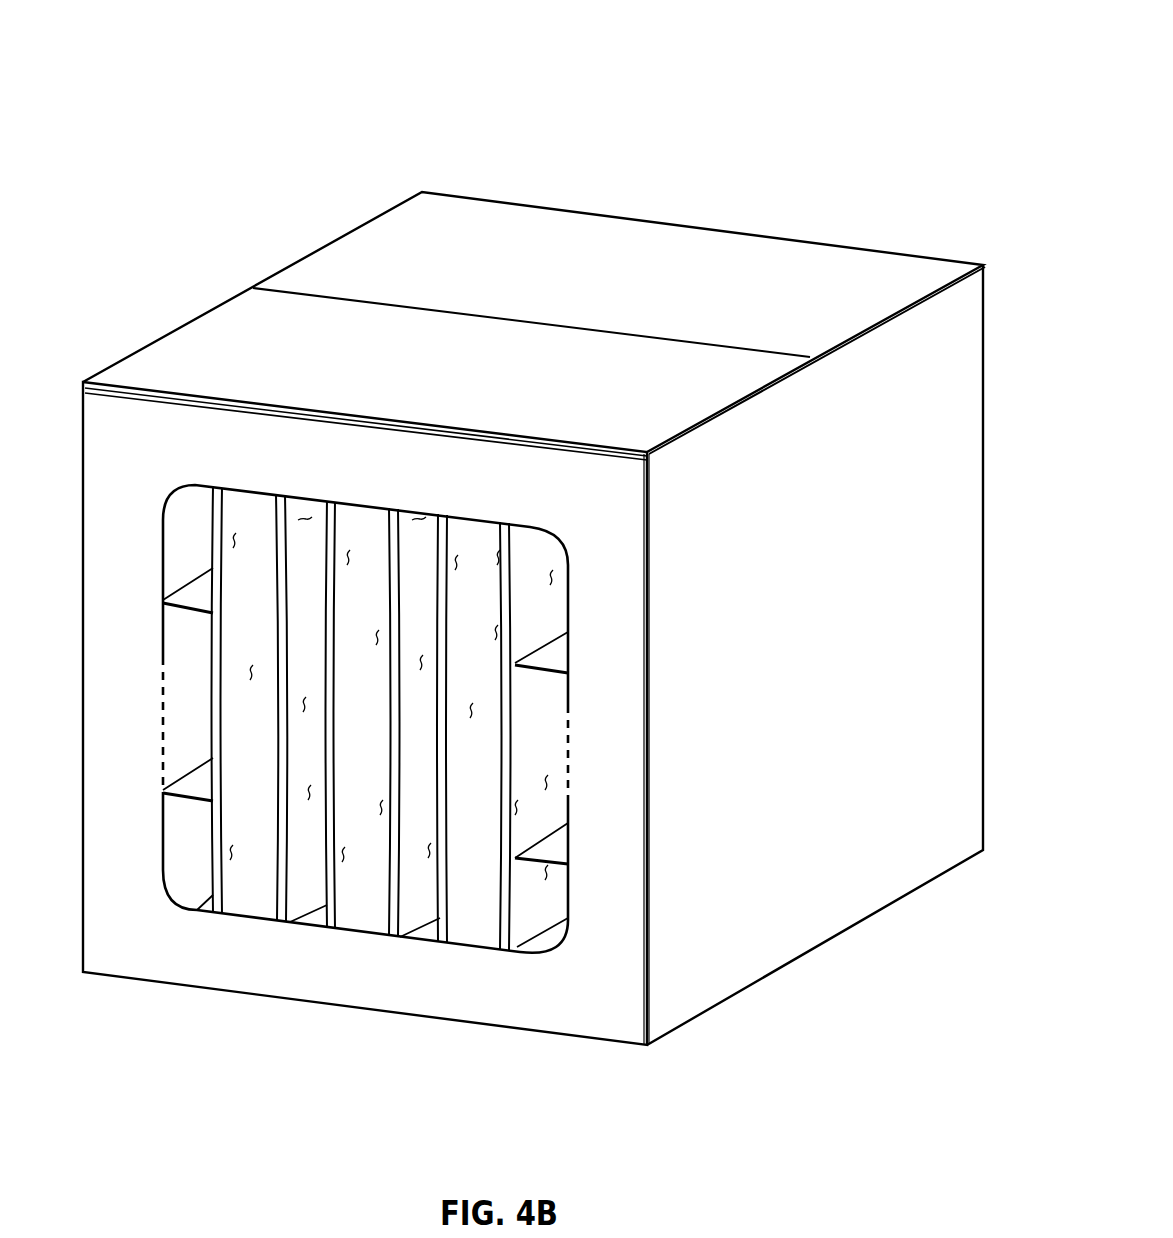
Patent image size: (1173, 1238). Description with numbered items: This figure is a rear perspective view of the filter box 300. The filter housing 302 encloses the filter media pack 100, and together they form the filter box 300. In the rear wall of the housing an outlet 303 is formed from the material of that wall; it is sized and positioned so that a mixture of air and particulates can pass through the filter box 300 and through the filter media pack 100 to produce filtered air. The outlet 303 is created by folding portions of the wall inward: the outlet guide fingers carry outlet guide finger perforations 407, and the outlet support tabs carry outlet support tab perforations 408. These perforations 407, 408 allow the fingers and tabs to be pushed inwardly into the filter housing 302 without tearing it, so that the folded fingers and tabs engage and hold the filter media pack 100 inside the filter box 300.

The filter box 300 is at (258, 42).
The filter housing 302 is at (672, 222).
The outlet 303 is at (362, 686).
The outlet guide finger perforations 407 is at (315, 497).
The outlet support tab perforations 408 is at (160, 722).
The filter media pack 100 is at (360, 892).